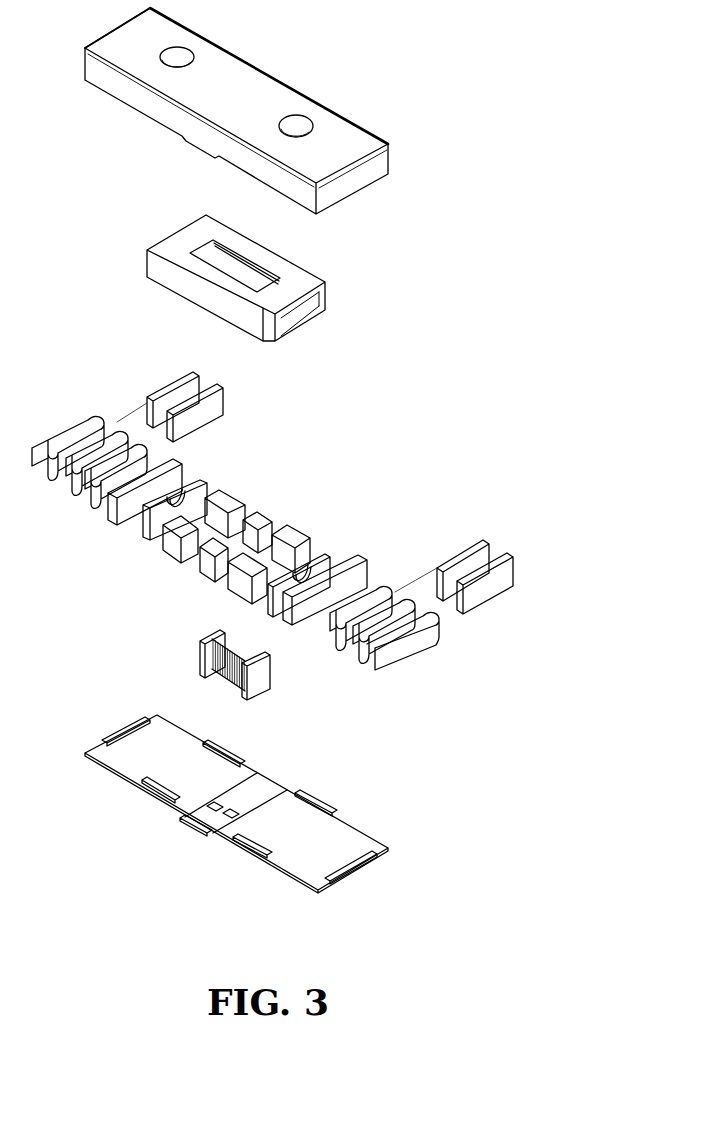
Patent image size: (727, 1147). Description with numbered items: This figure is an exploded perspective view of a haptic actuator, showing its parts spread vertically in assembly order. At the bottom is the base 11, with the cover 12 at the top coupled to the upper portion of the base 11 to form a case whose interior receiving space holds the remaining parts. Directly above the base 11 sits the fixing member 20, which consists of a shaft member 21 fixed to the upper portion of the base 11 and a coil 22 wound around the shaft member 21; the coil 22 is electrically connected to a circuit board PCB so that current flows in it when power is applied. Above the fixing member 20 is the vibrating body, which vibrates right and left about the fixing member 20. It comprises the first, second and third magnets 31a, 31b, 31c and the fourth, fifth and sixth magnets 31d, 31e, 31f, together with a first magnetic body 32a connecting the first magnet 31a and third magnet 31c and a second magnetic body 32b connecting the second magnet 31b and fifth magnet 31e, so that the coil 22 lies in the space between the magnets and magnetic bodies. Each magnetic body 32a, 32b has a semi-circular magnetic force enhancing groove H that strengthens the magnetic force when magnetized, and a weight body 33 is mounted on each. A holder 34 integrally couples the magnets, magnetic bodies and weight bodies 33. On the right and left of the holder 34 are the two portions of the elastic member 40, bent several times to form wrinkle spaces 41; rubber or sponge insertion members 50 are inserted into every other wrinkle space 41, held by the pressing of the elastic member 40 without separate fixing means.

The cover 12 is at (285, 95).
The holder 34 is at (356, 293).
The elastic member 40 is at (63, 438).
The wrinkle space 41 is at (105, 452).
The insertion member 50 is at (217, 404).
The weight body 33 is at (118, 515).
The first magnetic body 32a is at (203, 480).
The second magnetic body 32b is at (325, 558).
The magnetic force enhancing groove H is at (177, 492).
The first magnet 31a is at (225, 495).
The second magnet 31b is at (293, 538).
The third magnet 31c is at (257, 518).
The fourth magnet 31d is at (176, 548).
The fifth magnet 31e is at (243, 588).
The sixth magnet 31f is at (208, 567).
The fixing member 20 is at (271, 704).
The shaft member 21 is at (265, 673).
The coil 22 is at (223, 685).
The base 11 is at (222, 808).
The circuit board PCB is at (203, 817).